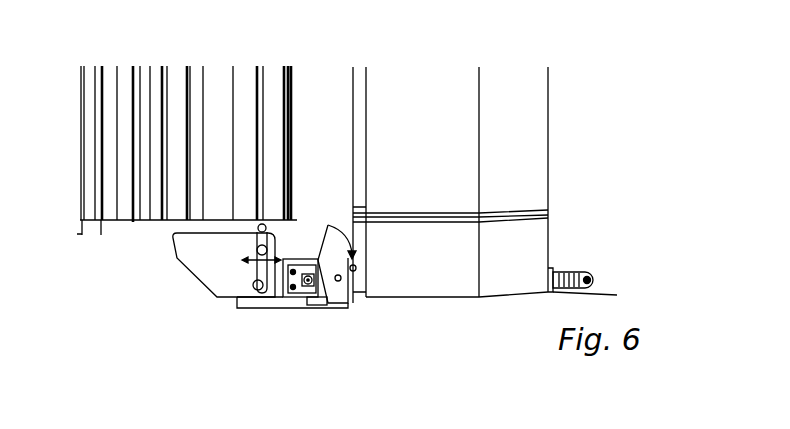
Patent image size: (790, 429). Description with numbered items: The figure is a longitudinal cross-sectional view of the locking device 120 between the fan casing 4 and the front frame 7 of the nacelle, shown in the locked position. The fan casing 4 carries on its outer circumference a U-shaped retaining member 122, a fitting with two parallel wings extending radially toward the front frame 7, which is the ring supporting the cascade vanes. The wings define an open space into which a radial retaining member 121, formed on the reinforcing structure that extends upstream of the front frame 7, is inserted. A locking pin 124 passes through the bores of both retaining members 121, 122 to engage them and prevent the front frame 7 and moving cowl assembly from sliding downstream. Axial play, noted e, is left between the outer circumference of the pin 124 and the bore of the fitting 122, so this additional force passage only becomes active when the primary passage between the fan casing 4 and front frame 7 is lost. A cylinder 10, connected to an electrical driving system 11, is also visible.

The fan casing 4 is at (310, 90).
The front frame 7 is at (357, 86).
The cylinder 10 is at (563, 266).
The electrical driving system 11 is at (307, 253).
The locking device 120 is at (223, 317).
The retaining member 121 is at (275, 297).
The retaining member 122 is at (224, 249).
The locking pin 124 is at (252, 300).